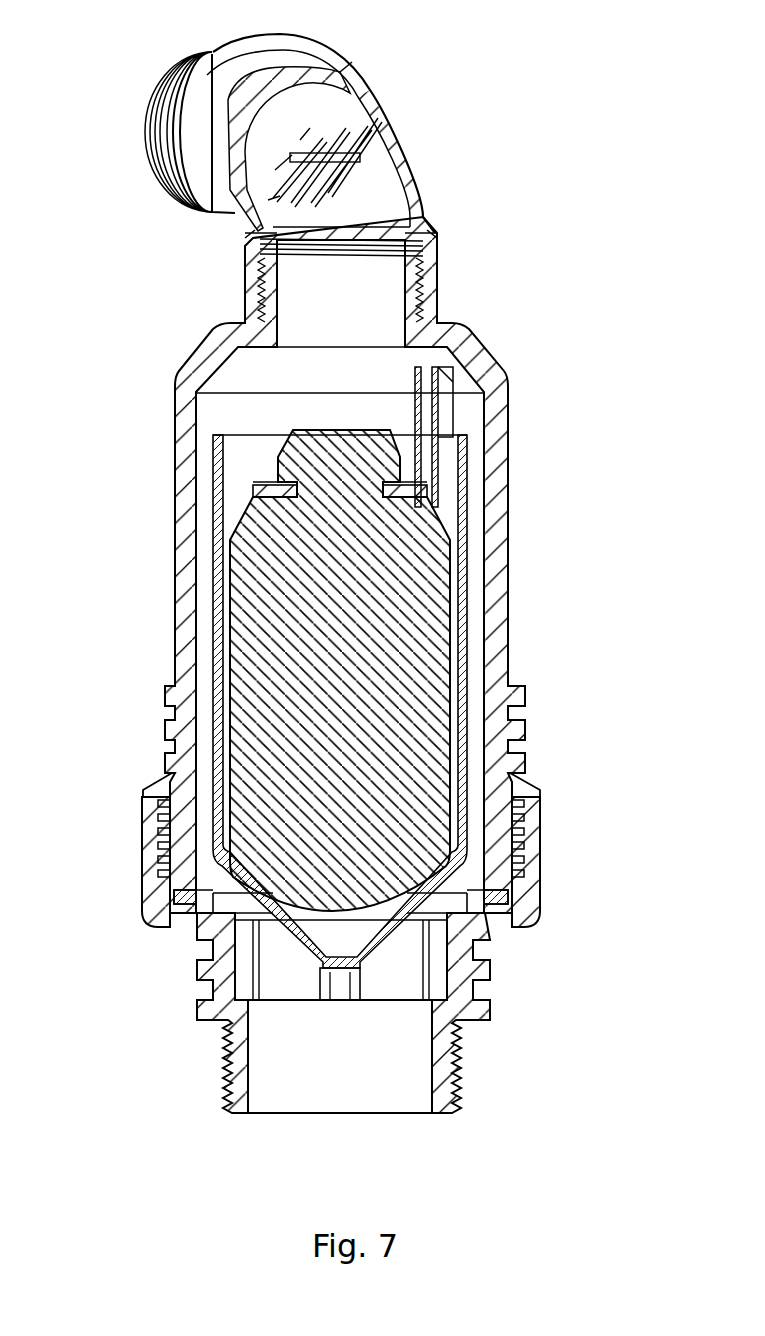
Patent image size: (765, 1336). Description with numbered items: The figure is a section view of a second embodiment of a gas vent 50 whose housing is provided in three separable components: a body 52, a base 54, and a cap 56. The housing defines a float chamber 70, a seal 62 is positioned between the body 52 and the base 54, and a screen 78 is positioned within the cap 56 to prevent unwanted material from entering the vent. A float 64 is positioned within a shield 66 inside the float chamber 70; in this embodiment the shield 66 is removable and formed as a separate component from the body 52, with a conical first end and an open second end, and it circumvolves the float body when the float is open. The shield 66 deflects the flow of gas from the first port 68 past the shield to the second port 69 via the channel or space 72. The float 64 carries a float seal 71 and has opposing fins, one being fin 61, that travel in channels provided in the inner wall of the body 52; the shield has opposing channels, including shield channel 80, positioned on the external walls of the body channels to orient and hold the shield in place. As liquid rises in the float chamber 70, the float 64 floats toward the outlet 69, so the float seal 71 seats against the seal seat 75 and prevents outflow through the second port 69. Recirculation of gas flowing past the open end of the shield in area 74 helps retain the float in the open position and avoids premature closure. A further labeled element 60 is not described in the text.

The gas vent 50 is at (522, 204).
The body 52 is at (505, 526).
The base 54 is at (540, 868).
The cap 56 is at (410, 157).
The nut threads 60 is at (540, 827).
The fin 61 is at (425, 412).
The seal 62 is at (505, 903).
The float 64 is at (285, 648).
The shield 66 is at (213, 582).
The first port 68 is at (345, 1078).
The second port 69 is at (256, 128).
The float chamber 70 is at (484, 599).
The float seal 71 is at (262, 485).
The channel 72 is at (482, 733).
The area 74 is at (235, 416).
The seal seat 75 is at (440, 323).
The screen 78 is at (397, 123).
The shield channel 80 is at (440, 463).